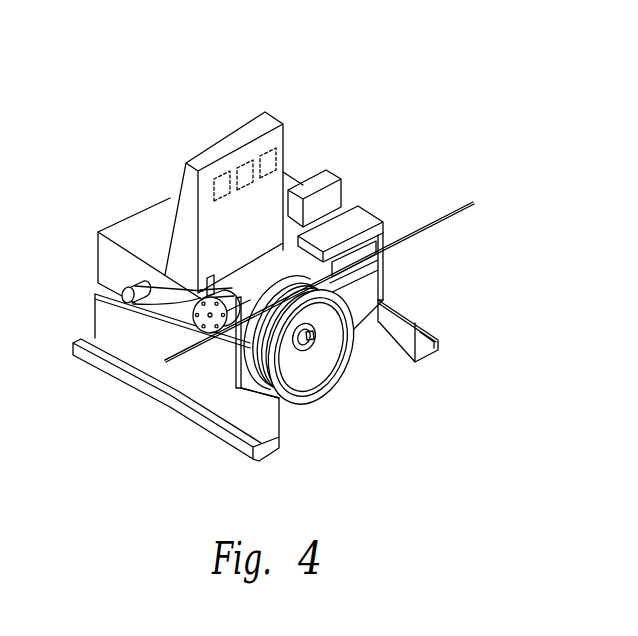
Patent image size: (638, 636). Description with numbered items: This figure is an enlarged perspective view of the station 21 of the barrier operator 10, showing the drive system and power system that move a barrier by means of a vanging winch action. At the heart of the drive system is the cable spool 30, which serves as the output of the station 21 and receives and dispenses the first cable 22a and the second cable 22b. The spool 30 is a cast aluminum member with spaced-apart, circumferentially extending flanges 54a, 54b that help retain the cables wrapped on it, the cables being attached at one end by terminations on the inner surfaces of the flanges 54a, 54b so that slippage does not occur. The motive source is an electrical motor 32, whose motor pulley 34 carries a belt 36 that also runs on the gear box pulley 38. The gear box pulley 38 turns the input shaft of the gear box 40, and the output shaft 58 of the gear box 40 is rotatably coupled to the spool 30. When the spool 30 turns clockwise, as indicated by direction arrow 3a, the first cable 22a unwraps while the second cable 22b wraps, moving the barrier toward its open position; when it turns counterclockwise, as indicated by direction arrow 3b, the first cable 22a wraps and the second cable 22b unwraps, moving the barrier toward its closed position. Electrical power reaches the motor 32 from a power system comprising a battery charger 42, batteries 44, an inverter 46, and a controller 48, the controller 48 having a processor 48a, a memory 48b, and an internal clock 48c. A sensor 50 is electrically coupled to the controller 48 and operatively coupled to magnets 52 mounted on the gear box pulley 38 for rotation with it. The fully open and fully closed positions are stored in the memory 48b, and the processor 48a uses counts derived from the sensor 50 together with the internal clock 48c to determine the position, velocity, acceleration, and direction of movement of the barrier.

The barrier operator 10 is at (233, 88).
The station 21 is at (92, 364).
The first cable 22a is at (453, 210).
The second cable 22b is at (166, 365).
The cable spool 30 is at (317, 369).
The electrical motor 32 is at (131, 270).
The motor pulley 34 is at (117, 291).
The belt 36 is at (94, 318).
The gear box pulley 38 is at (172, 322).
The gear box 40 is at (208, 334).
The battery charger 42 is at (358, 217).
The batteries 44 is at (368, 290).
The inverter 46 is at (313, 179).
The controller 48 is at (198, 196).
The processor 48a is at (220, 177).
The memory 48b is at (247, 163).
The internal clock 48c is at (283, 128).
The sensor 50 is at (212, 276).
The magnets 52 is at (165, 330).
The flange 54a is at (305, 402).
The flange 54b is at (235, 390).
The output shaft 58 is at (300, 368).
The direction arrow 3a is at (297, 401).
The direction arrow 3b is at (361, 348).